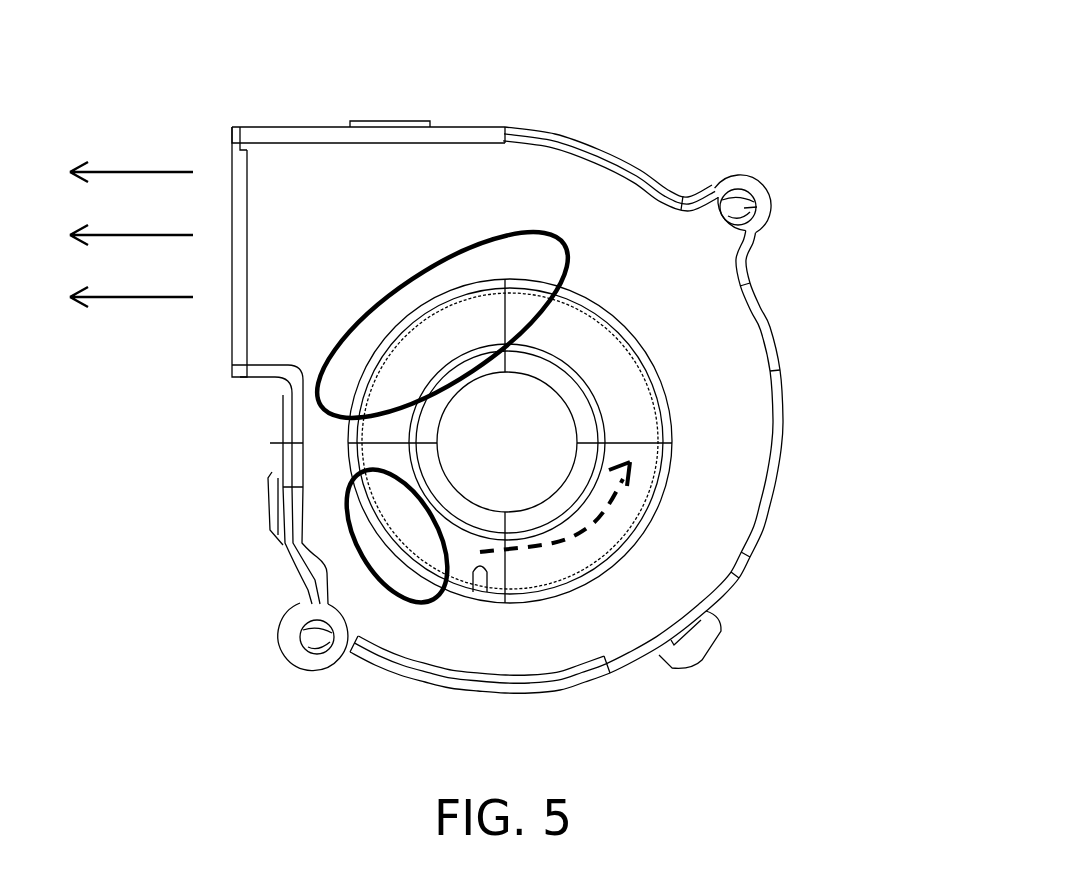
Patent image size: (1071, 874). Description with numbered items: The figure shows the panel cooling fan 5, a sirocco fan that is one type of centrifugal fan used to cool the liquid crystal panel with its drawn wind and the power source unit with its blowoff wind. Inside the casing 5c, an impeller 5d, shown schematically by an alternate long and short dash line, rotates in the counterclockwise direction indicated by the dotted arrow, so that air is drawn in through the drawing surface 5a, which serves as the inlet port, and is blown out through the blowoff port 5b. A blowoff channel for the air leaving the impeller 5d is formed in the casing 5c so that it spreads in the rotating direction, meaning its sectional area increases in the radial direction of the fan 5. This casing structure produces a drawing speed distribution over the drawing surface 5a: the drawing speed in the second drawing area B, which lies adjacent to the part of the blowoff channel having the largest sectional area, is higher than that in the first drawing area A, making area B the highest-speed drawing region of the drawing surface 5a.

The panel cooling fan 5 is at (790, 127).
The drawing surface (inlet port) 5a is at (633, 366).
The blowoff port 5b is at (233, 172).
The casing 5c is at (483, 170).
The impeller 5d is at (477, 575).
The first drawing area A is at (362, 556).
The second drawing area B is at (340, 345).